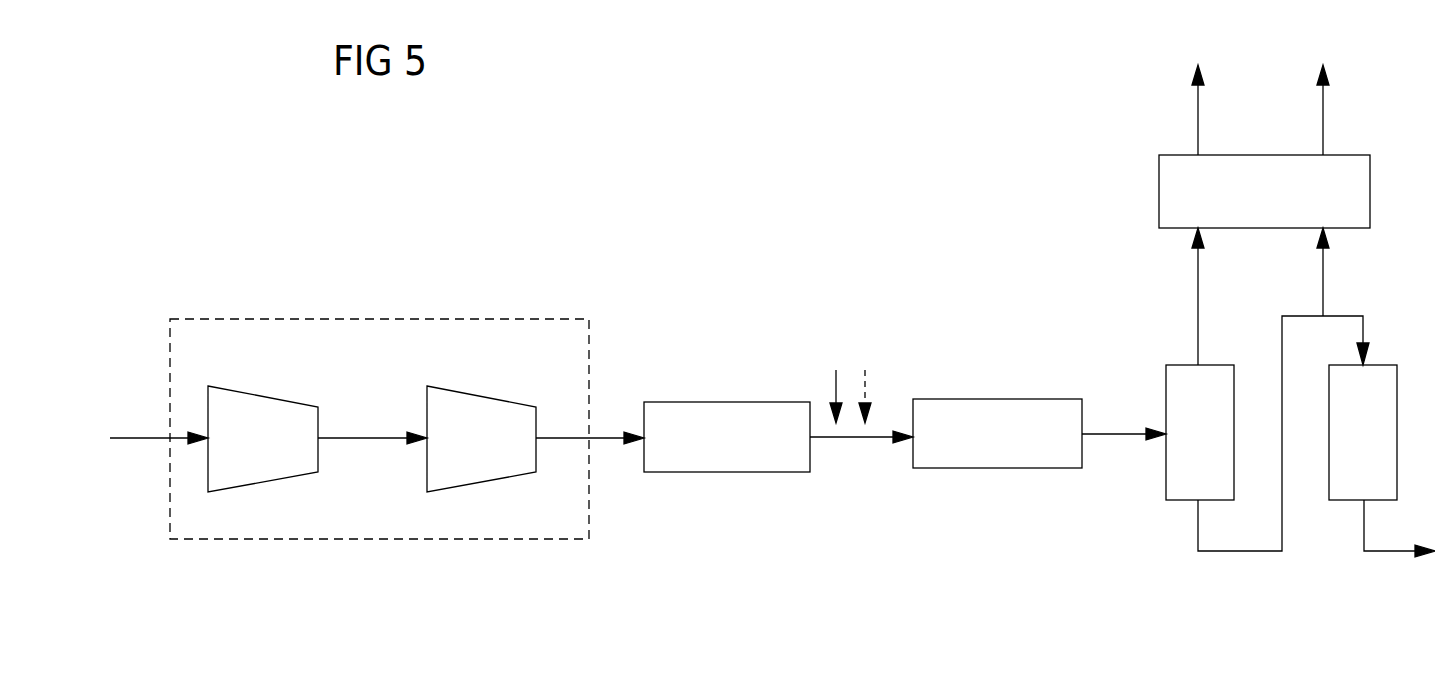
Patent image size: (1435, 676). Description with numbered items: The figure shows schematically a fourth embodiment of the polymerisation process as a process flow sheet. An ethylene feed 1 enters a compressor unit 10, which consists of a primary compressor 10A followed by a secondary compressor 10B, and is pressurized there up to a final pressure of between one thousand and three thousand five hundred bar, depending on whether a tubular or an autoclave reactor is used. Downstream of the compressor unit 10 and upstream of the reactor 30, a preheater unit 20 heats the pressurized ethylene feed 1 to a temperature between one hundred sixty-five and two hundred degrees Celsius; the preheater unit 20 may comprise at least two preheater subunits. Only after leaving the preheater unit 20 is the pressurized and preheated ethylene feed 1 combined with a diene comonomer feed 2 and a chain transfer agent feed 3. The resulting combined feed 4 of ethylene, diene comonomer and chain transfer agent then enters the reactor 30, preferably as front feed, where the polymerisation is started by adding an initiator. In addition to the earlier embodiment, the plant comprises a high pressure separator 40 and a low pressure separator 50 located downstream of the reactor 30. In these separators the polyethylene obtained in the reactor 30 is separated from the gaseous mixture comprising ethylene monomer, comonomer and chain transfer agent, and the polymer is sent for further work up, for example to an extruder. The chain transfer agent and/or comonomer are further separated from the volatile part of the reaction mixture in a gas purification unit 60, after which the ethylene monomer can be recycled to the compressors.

The ethylene feed 1 is at (377, 423).
The diene comonomer feed 2 is at (837, 382).
The chain transfer agent feed 3 is at (866, 382).
The combined feed 4 is at (861, 424).
The compressor unit 10 is at (407, 317).
The primary compressor 10A is at (248, 393).
The secondary compressor 10B is at (472, 393).
The preheater unit 20 is at (720, 400).
The reactor 30 is at (992, 398).
The high pressure separator 40 is at (1177, 483).
The low pressure separator 50 is at (1348, 488).
The gas purification unit 60 is at (1168, 193).